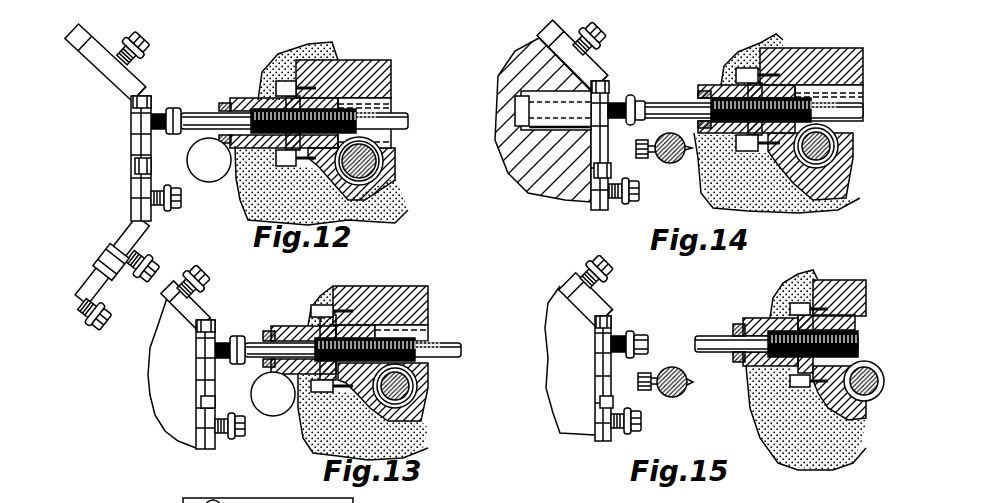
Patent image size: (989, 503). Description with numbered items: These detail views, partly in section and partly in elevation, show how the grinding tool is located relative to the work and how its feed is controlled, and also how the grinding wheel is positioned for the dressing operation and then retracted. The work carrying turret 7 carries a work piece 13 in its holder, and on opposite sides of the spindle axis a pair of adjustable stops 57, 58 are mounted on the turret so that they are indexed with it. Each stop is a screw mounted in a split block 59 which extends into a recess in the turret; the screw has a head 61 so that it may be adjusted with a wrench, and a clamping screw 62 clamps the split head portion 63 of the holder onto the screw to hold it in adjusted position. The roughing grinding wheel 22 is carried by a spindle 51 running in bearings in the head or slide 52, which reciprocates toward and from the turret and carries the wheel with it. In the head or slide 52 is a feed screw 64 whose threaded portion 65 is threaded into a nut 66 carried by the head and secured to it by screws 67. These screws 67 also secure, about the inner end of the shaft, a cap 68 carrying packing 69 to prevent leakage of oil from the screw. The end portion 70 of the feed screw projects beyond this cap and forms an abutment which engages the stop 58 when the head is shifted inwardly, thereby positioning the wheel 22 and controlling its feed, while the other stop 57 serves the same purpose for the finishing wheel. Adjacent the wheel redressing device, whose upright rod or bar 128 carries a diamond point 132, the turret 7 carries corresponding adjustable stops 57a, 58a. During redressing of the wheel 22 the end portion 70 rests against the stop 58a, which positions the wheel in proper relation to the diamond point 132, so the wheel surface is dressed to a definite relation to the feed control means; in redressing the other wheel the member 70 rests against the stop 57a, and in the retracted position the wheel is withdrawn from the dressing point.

In FIG. 12, the work carrying turret 7 is at (108, 176).
In FIG. 14, the work carrying turret 7 is at (512, 168).
In FIG. 13, the work carrying turret 7 is at (148, 392).
In FIG. 15, the work carrying turret 7 is at (564, 405).
In FIG. 12, the work piece 13 is at (200, 163).
In FIG. 13, the work piece 13 is at (266, 400).
In FIG. 12, the roughing grinding wheel 22 is at (238, 203).
In FIG. 14, the roughing grinding wheel 22 is at (706, 198).
In FIG. 13, the roughing grinding wheel 22 is at (316, 442).
In FIG. 15, the roughing grinding wheel 22 is at (748, 420).
In FIG. 12, the spindle 51 is at (364, 154).
In FIG. 14, the spindle 51 is at (812, 146).
In FIG. 13, the spindle 51 is at (402, 386).
In FIG. 15, the spindle 51 is at (864, 381).
In FIG. 12, the head or slide 52 is at (372, 66).
In FIG. 14, the head or slide 52 is at (811, 124).
In FIG. 13, the head or slide 52 is at (402, 278).
In FIG. 15, the head or slide 52 is at (836, 272).
In FIG. 12, the adjustable stop 57 is at (140, 36).
In FIG. 14, the adjustable stop 57 is at (600, 27).
In FIG. 13, the adjustable stop 57 is at (192, 262).
In FIG. 15, the adjustable stop 57 is at (598, 255).
In FIG. 14, the adjustable stop 57a is at (636, 180).
In FIG. 15, the adjustable stop 57a is at (637, 418).
In FIG. 12, the adjustable stop 58 is at (168, 100).
In FIG. 13, the adjustable stop 58 is at (228, 328).
In FIG. 14, the adjustable stop 58a is at (633, 93).
In FIG. 15, the adjustable stop 58a is at (645, 333).
In FIG. 14, the split block 59 is at (530, 83).
In FIG. 14, the head 61 is at (622, 87).
In FIG. 12, the clamping screw 62 is at (130, 88).
In FIG. 14, the clamping screw 62 is at (598, 73).
In FIG. 13, the clamping screw 62 is at (206, 364).
In FIG. 15, the split head portion 63 is at (600, 316).
In FIG. 12, the feed screw 64 is at (380, 108).
In FIG. 14, the feed screw 64 is at (830, 95).
In FIG. 13, the feed screw 64 is at (436, 336).
In FIG. 12, the threaded portion 65 is at (330, 90).
In FIG. 14, the threaded portion 65 is at (798, 45).
In FIG. 13, the nut 66 is at (370, 317).
In FIG. 12, the screw 67 is at (280, 73).
In FIG. 14, the screw 67 is at (758, 109).
In FIG. 13, the screw 67 is at (312, 297).
In FIG. 15, the screw 67 is at (809, 345).
In FIG. 12, the cap 68 is at (242, 90).
In FIG. 14, the cap 68 is at (712, 77).
In FIG. 13, the cap 68 is at (283, 318).
In FIG. 15, the cap 68 is at (770, 342).
In FIG. 12, the packing 69 is at (218, 93).
In FIG. 14, the packing 69 is at (698, 90).
In FIG. 13, the packing 69 is at (258, 323).
In FIG. 15, the packing 69 is at (736, 316).
In FIG. 12, the end portion of the feed screw 70 is at (214, 110).
In FIG. 14, the end portion of the feed screw 70 is at (672, 96).
In FIG. 13, the end portion of the feed screw 70 is at (242, 350).
In FIG. 15, the end portion of the feed screw 70 is at (706, 328).
In FIG. 14, the upright rod or bar 128 is at (657, 154).
In FIG. 15, the upright rod or bar 128 is at (666, 389).
In FIG. 14, the diamond point 132 is at (680, 161).
In FIG. 15, the diamond point 132 is at (686, 374).